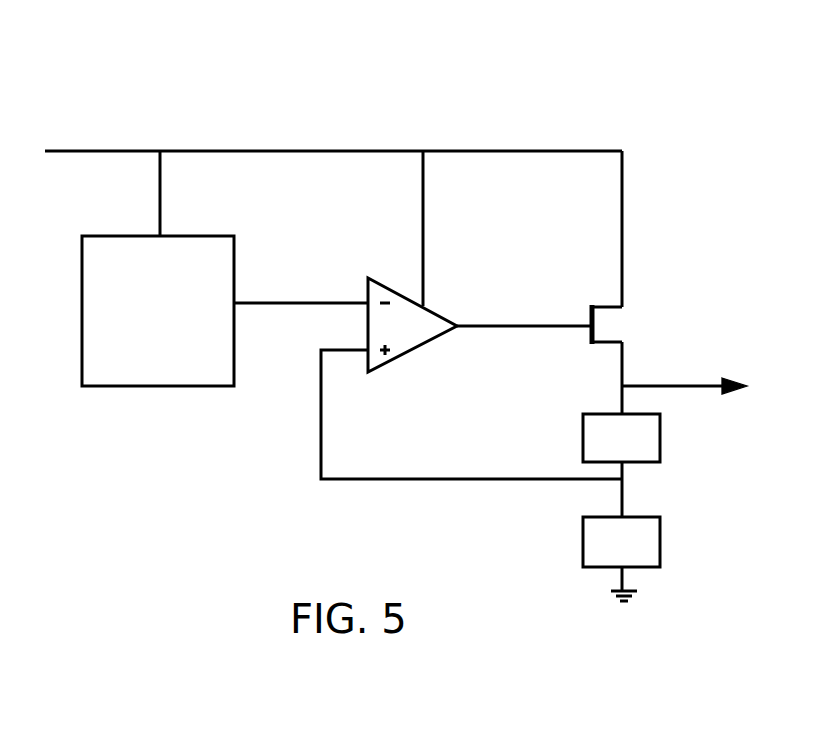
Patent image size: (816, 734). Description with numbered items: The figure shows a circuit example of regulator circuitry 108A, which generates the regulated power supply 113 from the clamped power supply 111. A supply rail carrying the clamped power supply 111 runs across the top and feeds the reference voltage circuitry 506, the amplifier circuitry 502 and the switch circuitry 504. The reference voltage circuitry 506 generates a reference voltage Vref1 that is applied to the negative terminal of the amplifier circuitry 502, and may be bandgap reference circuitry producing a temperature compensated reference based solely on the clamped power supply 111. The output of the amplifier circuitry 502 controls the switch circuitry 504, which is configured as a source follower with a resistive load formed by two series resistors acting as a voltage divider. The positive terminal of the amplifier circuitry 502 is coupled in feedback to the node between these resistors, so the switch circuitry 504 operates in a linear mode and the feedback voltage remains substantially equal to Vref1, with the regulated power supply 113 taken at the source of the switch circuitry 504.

The regulator circuitry 108A is at (147, 60).
The clamped power supply 111 is at (87, 150).
The amplifier circuitry 502 is at (368, 280).
The switch circuitry 504 is at (614, 322).
The reference voltage circuitry 506 is at (225, 268).
The regulated power supply 113 is at (650, 386).